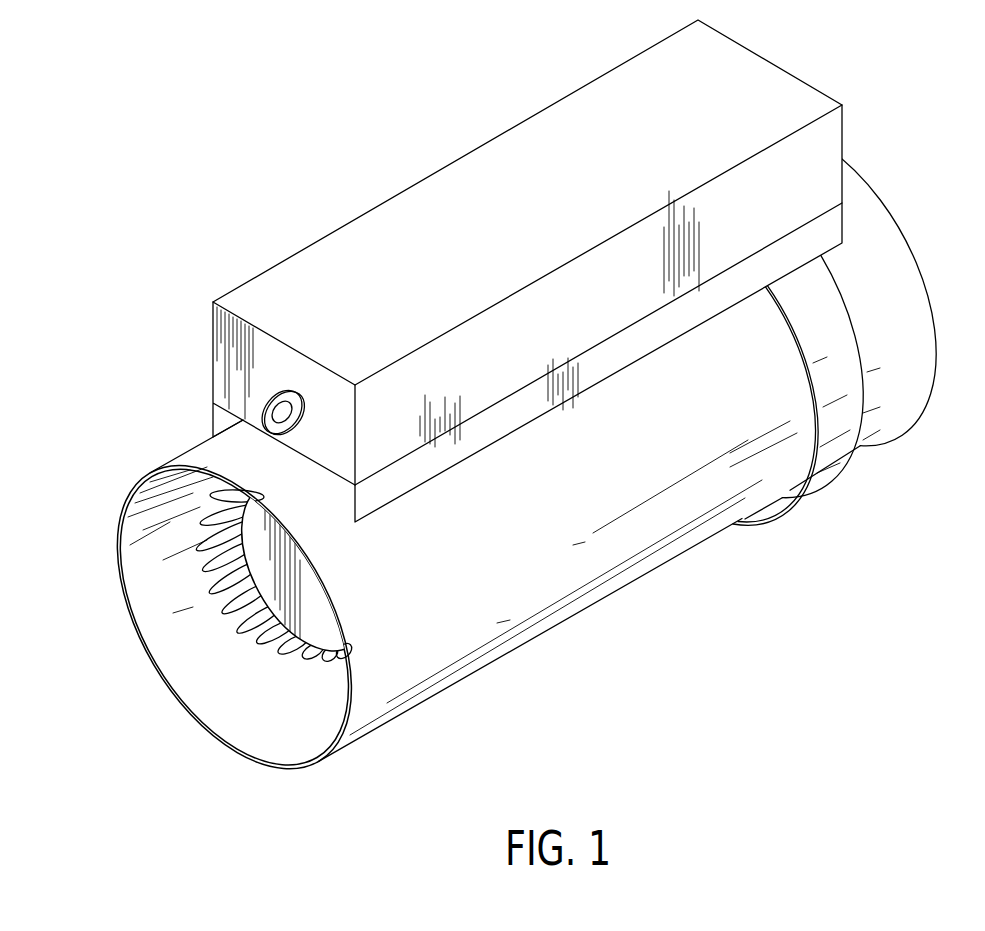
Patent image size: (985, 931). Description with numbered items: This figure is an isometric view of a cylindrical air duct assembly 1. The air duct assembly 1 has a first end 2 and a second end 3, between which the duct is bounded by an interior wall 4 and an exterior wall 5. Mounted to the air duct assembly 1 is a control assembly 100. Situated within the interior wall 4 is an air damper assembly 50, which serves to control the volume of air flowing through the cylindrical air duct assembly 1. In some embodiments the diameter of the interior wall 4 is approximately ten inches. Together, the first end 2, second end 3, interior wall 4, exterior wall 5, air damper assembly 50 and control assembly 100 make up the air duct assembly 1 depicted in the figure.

The air duct assembly 1 is at (96, 379).
The first end 2 is at (271, 797).
The second end 3 is at (887, 413).
The interior wall 4 is at (188, 667).
The exterior wall 5 is at (206, 454).
The air damper assembly 50 is at (213, 575).
The control assembly 100 is at (243, 366).